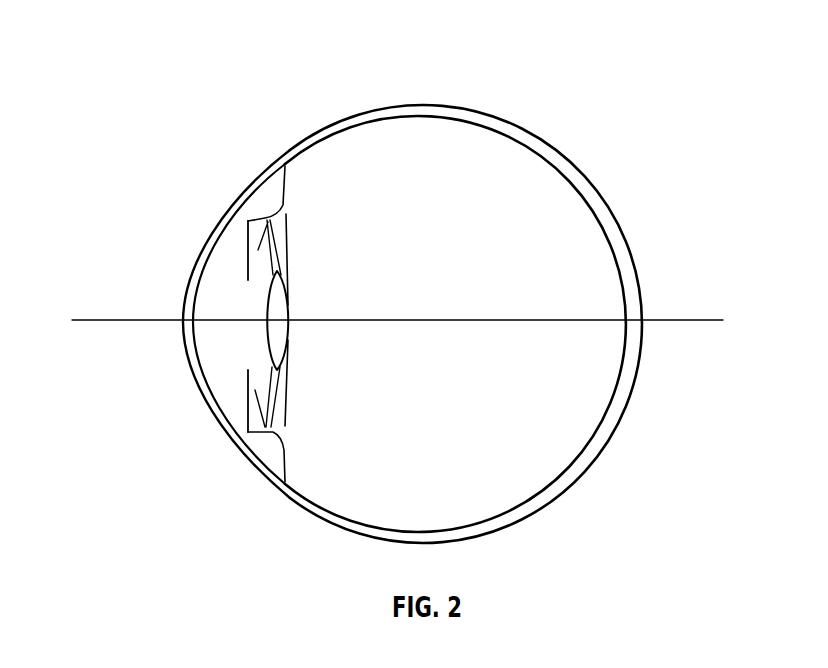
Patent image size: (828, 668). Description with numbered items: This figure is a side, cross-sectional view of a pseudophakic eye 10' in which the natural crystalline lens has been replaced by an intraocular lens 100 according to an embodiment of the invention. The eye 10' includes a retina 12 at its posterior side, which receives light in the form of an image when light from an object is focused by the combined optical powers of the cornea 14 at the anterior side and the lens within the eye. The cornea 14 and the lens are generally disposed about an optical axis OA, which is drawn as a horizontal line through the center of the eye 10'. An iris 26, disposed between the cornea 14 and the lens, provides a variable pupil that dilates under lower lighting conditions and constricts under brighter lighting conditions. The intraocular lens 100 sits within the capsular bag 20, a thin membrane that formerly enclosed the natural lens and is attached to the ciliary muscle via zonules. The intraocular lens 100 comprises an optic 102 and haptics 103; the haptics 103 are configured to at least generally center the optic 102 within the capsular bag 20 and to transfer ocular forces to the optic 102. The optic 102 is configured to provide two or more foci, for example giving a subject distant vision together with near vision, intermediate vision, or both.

The pseudophakic eye 10' is at (363, 282).
The optical axis OA is at (97, 318).
The retina 12 is at (615, 397).
The cornea 14 is at (192, 387).
The capsular bag 20 is at (287, 370).
The iris 26 is at (248, 387).
The intraocular lens 100 is at (247, 300).
The optic 102 is at (275, 310).
The haptics 103 is at (272, 250).